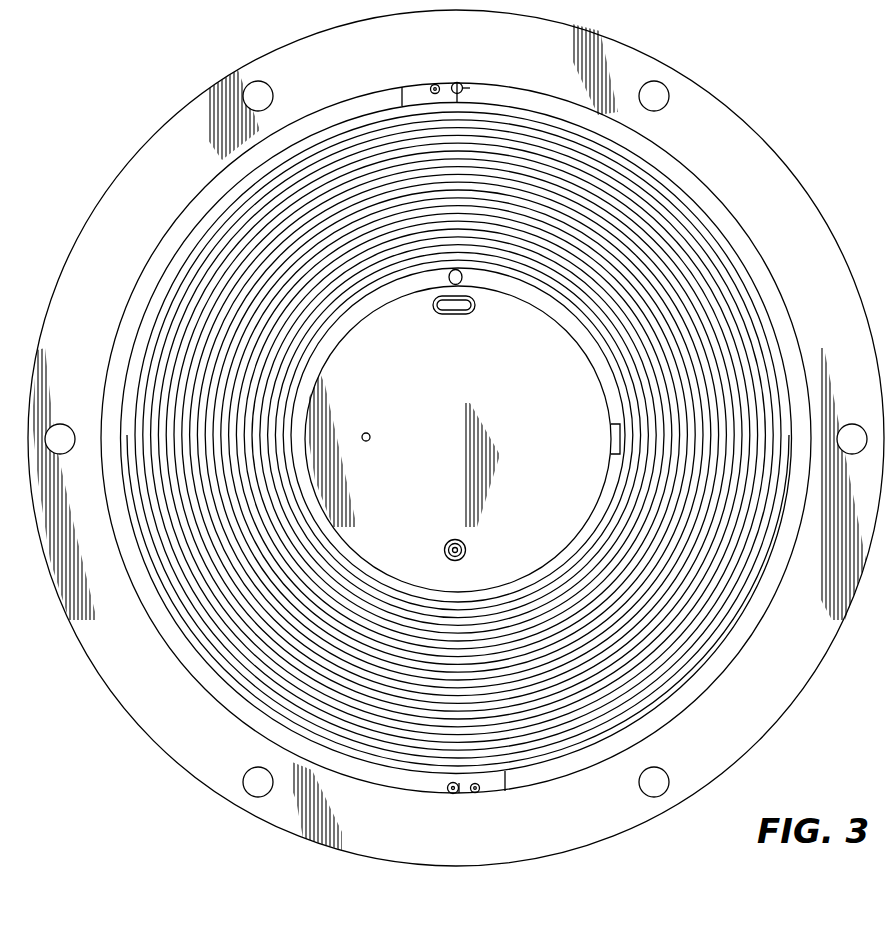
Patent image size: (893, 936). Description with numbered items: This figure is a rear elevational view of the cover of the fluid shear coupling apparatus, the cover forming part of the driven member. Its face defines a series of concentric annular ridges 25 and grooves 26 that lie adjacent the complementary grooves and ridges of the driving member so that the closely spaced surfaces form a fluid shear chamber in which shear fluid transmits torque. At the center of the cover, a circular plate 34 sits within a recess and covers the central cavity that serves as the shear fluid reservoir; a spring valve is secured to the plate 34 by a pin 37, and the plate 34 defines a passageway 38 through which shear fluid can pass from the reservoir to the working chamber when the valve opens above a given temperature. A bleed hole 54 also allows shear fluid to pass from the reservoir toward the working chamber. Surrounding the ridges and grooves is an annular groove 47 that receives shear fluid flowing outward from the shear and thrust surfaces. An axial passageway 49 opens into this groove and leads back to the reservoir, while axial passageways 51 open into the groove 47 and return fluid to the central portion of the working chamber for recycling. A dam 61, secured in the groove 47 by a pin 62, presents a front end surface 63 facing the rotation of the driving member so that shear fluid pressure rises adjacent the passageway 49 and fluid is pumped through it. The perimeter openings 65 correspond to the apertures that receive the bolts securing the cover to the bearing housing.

The annular ridges 25 is at (655, 698).
The grooves 26 is at (670, 680).
The circular plate 34 is at (540, 444).
The pin 37 is at (466, 548).
The passageway 38 is at (455, 306).
The annular groove 47 is at (692, 187).
The axial passageway 49 is at (448, 789).
The axial passageways 51 is at (462, 88).
The bleed hole 54 is at (369, 434).
The dam 61 is at (422, 92).
The pin 62 is at (477, 795).
The front end surface 63 is at (462, 795).
The bolt holes 65 is at (655, 93).